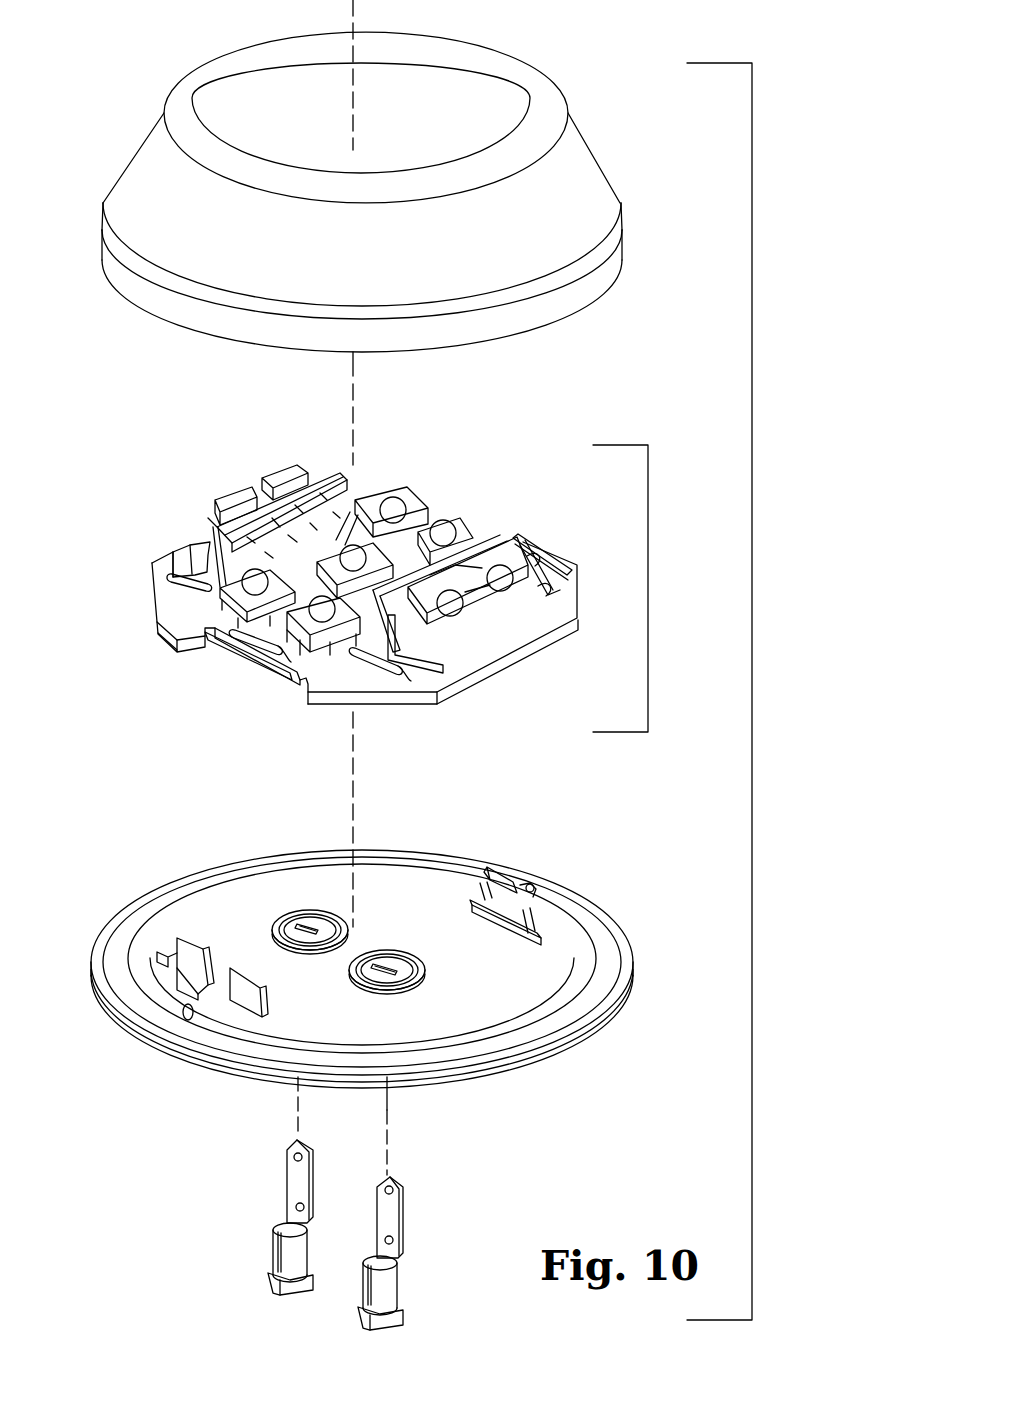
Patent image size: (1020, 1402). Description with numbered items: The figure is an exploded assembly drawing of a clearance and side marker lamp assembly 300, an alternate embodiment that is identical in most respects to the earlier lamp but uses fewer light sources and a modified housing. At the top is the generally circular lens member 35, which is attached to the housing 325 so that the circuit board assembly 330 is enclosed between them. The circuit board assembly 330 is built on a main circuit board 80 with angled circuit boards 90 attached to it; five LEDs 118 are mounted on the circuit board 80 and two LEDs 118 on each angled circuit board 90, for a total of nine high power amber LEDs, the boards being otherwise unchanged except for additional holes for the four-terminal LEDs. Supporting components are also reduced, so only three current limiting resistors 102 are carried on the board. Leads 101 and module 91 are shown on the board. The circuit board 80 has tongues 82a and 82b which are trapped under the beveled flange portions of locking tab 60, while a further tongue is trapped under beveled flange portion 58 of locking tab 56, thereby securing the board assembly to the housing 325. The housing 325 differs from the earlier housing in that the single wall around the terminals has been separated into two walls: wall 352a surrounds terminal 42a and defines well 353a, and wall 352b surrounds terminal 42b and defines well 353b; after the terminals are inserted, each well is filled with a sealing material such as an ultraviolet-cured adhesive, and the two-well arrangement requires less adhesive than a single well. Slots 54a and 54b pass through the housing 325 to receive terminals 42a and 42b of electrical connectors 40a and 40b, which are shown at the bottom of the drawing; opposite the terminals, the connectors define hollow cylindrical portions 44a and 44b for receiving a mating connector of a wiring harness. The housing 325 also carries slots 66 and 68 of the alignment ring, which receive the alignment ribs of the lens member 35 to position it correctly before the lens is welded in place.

The lens member 35 is at (593, 153).
The side marker lamp assembly 300 is at (752, 735).
The circuit board assembly 330 is at (393, 579).
The circuit board 80 is at (560, 637).
The LEDs 118 is at (240, 483).
The angled circuit boards 90 is at (343, 507).
The leads 101 is at (343, 510).
The LED module 91 is at (507, 537).
The current limiting resistors 102 is at (178, 580).
The tongue 82a is at (218, 645).
The tongue 82b is at (263, 667).
The housing 325 is at (389, 952).
The wall 352a is at (277, 920).
The wall 352b is at (425, 968).
The well 353a is at (300, 934).
The well 353b is at (387, 975).
The slot 54a is at (313, 923).
The slot 54b is at (393, 957).
The locking tab 60 is at (187, 970).
The slot 66 is at (187, 1015).
The locking tab 56 is at (507, 907).
The beveled flange portion 58 is at (498, 877).
The slot 68 is at (553, 897).
The terminal 42a is at (287, 1175).
The terminal 42b is at (403, 1180).
The electrical connector 40a is at (273, 1250).
The electrical connector 40b is at (397, 1285).
The hollow cylindrical portion 44a is at (293, 1295).
The hollow cylindrical portion 44b is at (395, 1328).